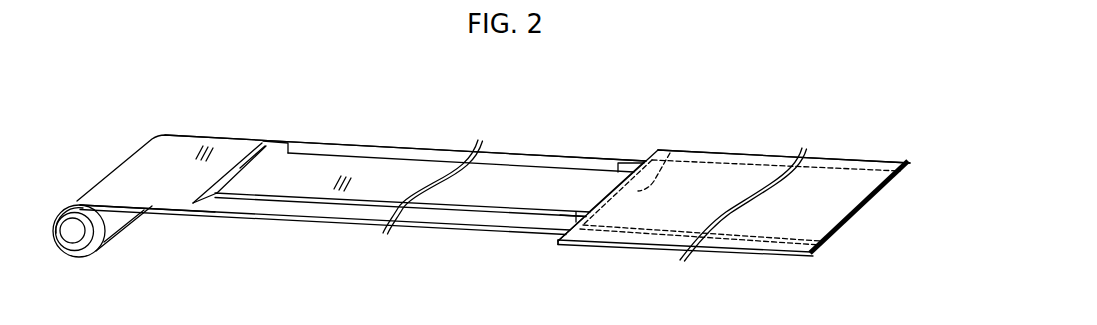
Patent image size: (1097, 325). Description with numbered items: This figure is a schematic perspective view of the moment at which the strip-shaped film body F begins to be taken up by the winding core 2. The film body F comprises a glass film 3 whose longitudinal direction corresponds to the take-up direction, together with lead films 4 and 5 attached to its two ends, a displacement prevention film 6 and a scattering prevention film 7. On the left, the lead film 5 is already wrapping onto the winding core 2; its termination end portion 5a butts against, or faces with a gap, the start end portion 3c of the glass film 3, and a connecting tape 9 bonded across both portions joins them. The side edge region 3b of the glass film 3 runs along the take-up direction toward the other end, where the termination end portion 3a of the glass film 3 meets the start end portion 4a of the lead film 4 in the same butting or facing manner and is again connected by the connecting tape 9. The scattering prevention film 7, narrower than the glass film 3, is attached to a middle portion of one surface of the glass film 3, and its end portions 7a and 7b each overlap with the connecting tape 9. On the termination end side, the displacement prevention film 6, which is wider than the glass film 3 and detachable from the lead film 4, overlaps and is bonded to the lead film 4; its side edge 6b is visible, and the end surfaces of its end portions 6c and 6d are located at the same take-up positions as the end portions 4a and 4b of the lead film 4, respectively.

The winding core 2 is at (84, 217).
The glass film 3 is at (407, 150).
The termination end portion 3a is at (618, 164).
The first sheet side edge 3b is at (355, 152).
The start end portion 3c is at (290, 150).
The lead film 4 is at (729, 181).
The start end portion 4a is at (671, 153).
The end portion 4b is at (841, 207).
The lead film 5 is at (226, 148).
The termination end portion 5a is at (207, 183).
The displacement prevention film 6 is at (870, 157).
The third sheet side edge 6b is at (823, 161).
The end portion 6c is at (575, 238).
The end portion 6d is at (803, 245).
The scattering prevention film 7 is at (500, 180).
The end portion 7a is at (235, 177).
The end portion 7b is at (593, 200).
The connecting tape 9 is at (265, 139).
The film body F is at (548, 154).